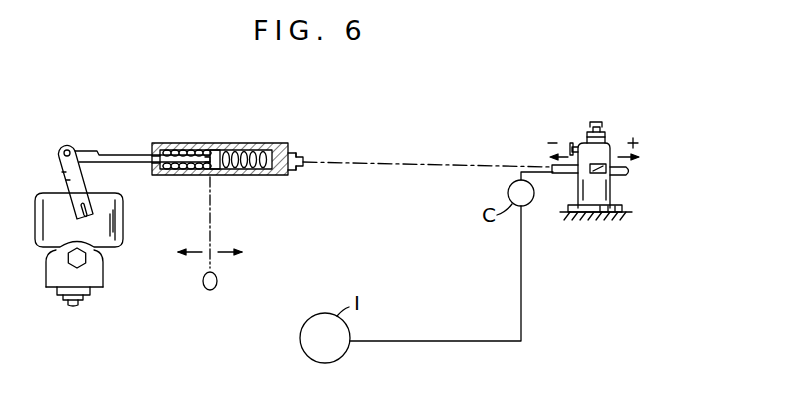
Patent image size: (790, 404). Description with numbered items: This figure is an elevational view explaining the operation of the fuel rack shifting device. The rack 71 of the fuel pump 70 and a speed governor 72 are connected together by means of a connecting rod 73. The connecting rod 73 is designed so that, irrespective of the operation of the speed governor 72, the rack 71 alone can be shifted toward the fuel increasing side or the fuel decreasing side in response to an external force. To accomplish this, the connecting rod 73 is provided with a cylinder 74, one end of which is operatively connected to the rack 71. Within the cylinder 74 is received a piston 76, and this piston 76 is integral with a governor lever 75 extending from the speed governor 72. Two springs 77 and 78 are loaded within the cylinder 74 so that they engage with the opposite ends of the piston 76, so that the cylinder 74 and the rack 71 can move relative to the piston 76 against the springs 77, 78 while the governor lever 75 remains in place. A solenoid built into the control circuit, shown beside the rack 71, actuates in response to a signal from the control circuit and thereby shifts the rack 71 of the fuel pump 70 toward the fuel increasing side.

The fuel pump 70 is at (620, 201).
The rack 71 is at (630, 176).
The speed governor 72 is at (103, 275).
The connecting rod 73 is at (231, 184).
The cylinder 74 is at (293, 171).
The governor lever 75 is at (116, 150).
The piston 76 is at (217, 149).
The spring 77 is at (201, 148).
The spring 78 is at (260, 151).